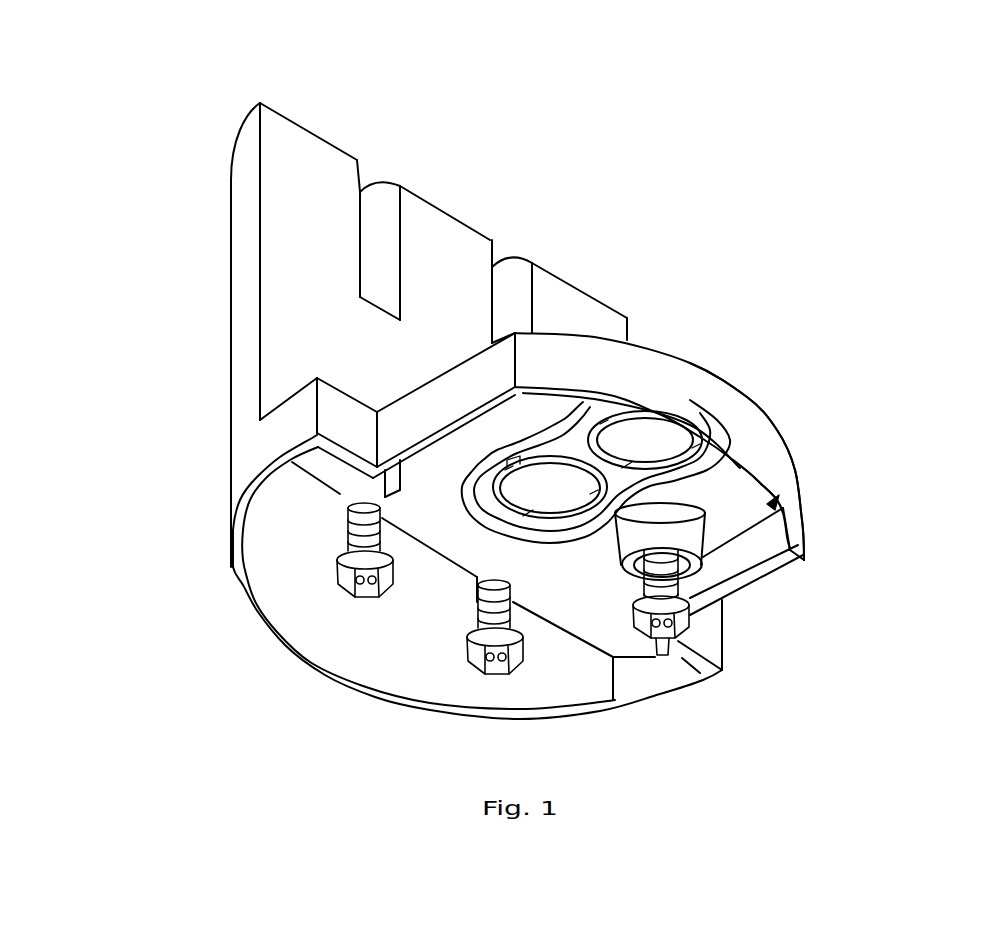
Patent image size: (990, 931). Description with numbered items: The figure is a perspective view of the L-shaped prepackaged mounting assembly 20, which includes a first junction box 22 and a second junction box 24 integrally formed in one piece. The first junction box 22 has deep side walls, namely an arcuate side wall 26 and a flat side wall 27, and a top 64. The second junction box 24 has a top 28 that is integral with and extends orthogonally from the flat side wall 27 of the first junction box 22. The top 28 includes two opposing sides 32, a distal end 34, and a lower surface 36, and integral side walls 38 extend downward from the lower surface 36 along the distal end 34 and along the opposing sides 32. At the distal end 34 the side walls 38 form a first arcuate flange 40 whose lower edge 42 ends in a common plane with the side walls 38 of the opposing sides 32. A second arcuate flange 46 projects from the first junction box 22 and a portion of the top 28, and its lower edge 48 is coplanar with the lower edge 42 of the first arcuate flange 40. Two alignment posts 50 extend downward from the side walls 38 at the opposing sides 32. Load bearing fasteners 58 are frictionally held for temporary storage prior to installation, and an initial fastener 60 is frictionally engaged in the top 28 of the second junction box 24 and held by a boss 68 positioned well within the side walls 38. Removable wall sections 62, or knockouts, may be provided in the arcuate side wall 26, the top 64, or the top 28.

The prepackaged mounting assembly 20 is at (767, 233).
The first junction box 22 is at (231, 177).
The second junction box 24 is at (800, 462).
The arcuate side wall 26 is at (231, 235).
The flat side wall 27 is at (293, 259).
The top 28 is at (662, 355).
The opposing sides 32 is at (433, 410).
The distal end 34 is at (743, 397).
The lower surface 36 is at (491, 441).
The side walls 38 is at (458, 393).
The first arcuate flange 40 is at (800, 488).
The lower edge 42 is at (800, 560).
The second arcuate flange 46 is at (330, 678).
The lower edge 48 is at (237, 565).
The alignment posts 50 is at (667, 652).
The load bearing fastener 58 is at (483, 630).
The initial fastener 60 is at (685, 623).
The removable wall sections 62 is at (633, 443).
The top 64 is at (443, 207).
The boss 68 is at (646, 538).